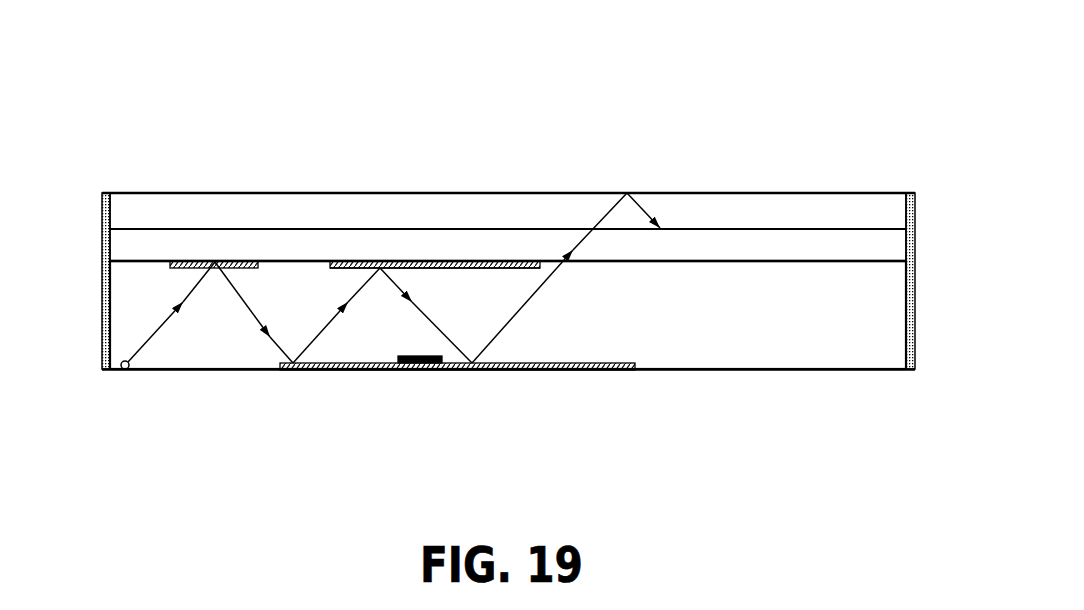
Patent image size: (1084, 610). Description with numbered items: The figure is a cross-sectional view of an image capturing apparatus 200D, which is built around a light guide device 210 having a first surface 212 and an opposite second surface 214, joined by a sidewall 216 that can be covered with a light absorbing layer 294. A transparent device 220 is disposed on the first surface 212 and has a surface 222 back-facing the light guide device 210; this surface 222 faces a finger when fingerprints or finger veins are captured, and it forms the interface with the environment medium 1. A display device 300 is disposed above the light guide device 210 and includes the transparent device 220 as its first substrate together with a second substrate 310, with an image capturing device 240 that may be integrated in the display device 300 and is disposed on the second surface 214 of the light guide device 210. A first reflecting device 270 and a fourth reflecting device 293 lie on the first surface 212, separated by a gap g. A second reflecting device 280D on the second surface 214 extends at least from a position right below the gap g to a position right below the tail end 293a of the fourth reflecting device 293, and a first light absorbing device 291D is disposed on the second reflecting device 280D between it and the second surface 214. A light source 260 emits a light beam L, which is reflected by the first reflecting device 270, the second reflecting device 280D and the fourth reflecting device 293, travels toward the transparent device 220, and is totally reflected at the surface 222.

The environment medium 1 is at (794, 75).
The image capturing apparatus 200D is at (503, 287).
The light guide device 210 is at (128, 305).
The first surface 212 is at (137, 257).
The second surface 214 is at (245, 372).
The sidewall 216 is at (101, 338).
The transparent device 220 is at (895, 242).
The surface 222 is at (805, 227).
The image capturing device 240 is at (531, 159).
The light source 260 is at (125, 369).
The first reflecting device 270 is at (215, 261).
The second reflecting device 280D is at (540, 370).
The first light absorbing device 291D is at (390, 370).
The fourth reflecting device 293 is at (430, 261).
The tail end 293a is at (525, 261).
The light absorbing layer 294 is at (107, 370).
The display device 300 is at (531, 159).
The second substrate 310 is at (882, 211).
The light beam L is at (143, 340).
The gap g is at (297, 262).